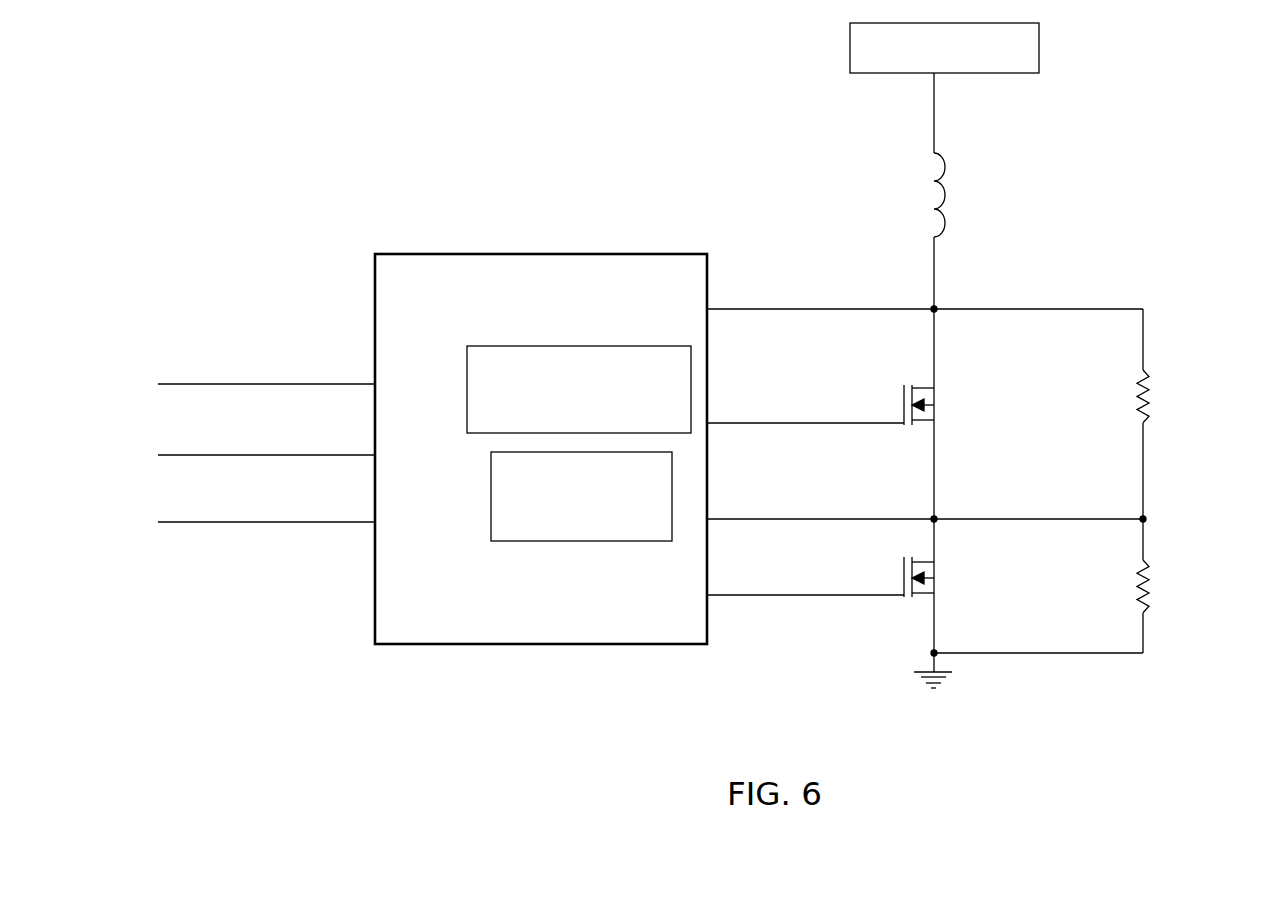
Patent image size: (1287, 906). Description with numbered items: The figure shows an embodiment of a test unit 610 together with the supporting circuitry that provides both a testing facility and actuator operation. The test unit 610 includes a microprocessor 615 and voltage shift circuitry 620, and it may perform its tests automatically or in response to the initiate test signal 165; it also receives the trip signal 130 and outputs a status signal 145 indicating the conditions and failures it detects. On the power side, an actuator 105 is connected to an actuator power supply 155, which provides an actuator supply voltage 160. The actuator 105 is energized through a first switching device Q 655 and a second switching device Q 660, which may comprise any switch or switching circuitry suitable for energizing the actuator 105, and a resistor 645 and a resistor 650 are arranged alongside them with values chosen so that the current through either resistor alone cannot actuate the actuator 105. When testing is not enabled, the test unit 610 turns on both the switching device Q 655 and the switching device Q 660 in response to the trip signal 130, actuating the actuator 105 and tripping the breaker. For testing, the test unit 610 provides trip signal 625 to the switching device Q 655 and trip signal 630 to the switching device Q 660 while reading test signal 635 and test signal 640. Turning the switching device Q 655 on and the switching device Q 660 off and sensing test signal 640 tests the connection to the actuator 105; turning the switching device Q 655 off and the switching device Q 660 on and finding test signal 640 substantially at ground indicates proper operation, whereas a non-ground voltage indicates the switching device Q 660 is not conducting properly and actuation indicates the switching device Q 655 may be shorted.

The test unit 610 is at (540, 254).
The microprocessor 615 is at (467, 388).
The voltage shift circuitry 620 is at (491, 497).
The status signal 145 is at (266, 370).
The trip signal 130 is at (266, 441).
The initiate test signal 165 is at (262, 508).
The test signal 635 is at (925, 295).
The trip signal 625 is at (805, 406).
The test signal 640 is at (925, 503).
The trip signal 630 is at (805, 582).
The actuator power supply 155 is at (1039, 47).
The actuator supply voltage 160 is at (942, 82).
The actuator 105 is at (935, 213).
The Q655 655 is at (954, 405).
The Q660 660 is at (954, 577).
The resistor 645 is at (1211, 396).
The resistor 650 is at (1211, 586).